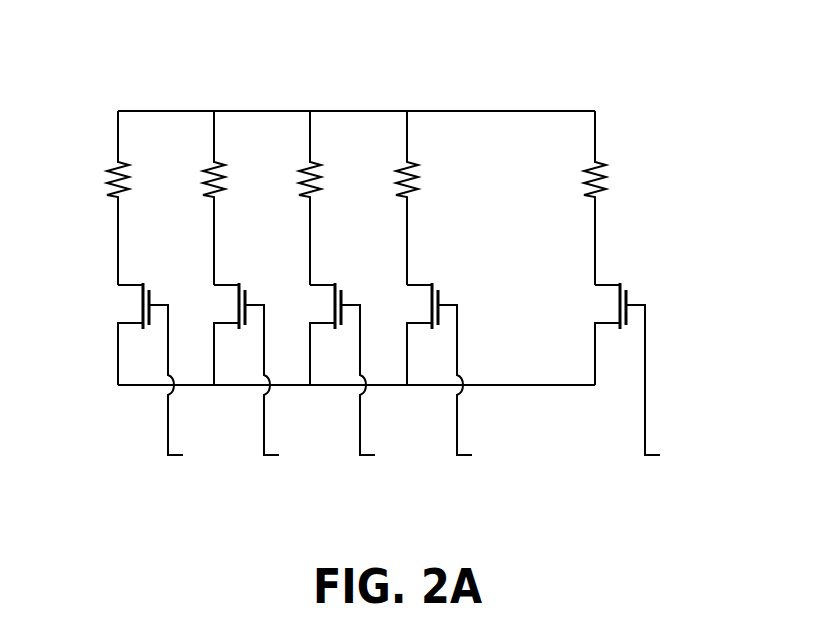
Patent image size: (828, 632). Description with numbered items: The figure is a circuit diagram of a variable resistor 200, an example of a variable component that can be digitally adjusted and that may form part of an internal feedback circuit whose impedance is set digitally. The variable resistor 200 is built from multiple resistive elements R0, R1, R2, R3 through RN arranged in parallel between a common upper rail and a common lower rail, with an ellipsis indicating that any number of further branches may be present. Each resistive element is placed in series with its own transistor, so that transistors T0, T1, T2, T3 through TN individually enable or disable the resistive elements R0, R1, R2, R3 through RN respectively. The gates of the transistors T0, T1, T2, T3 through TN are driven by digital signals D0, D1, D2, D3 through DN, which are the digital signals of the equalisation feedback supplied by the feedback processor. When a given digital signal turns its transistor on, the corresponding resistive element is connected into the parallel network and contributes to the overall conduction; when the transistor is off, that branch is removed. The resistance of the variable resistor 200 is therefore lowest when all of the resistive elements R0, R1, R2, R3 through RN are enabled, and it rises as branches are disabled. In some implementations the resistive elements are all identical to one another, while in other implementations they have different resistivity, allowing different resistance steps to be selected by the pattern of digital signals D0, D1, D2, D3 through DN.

The variable resistor 200 is at (128, 50).
The resistive element R0 is at (100, 198).
The resistive element R1 is at (196, 198).
The resistive element R2 is at (292, 198).
The resistive element R3 is at (389, 198).
The resistive element RN is at (577, 198).
The transistor T0 is at (119, 334).
The transistor T1 is at (215, 334).
The transistor T2 is at (311, 334).
The transistor T3 is at (408, 334).
The transistor TN is at (596, 334).
The digital signal D0 is at (182, 391).
The digital signal D1 is at (278, 391).
The digital signal D2 is at (374, 391).
The digital signal D3 is at (470, 391).
The digital signal DN is at (660, 391).